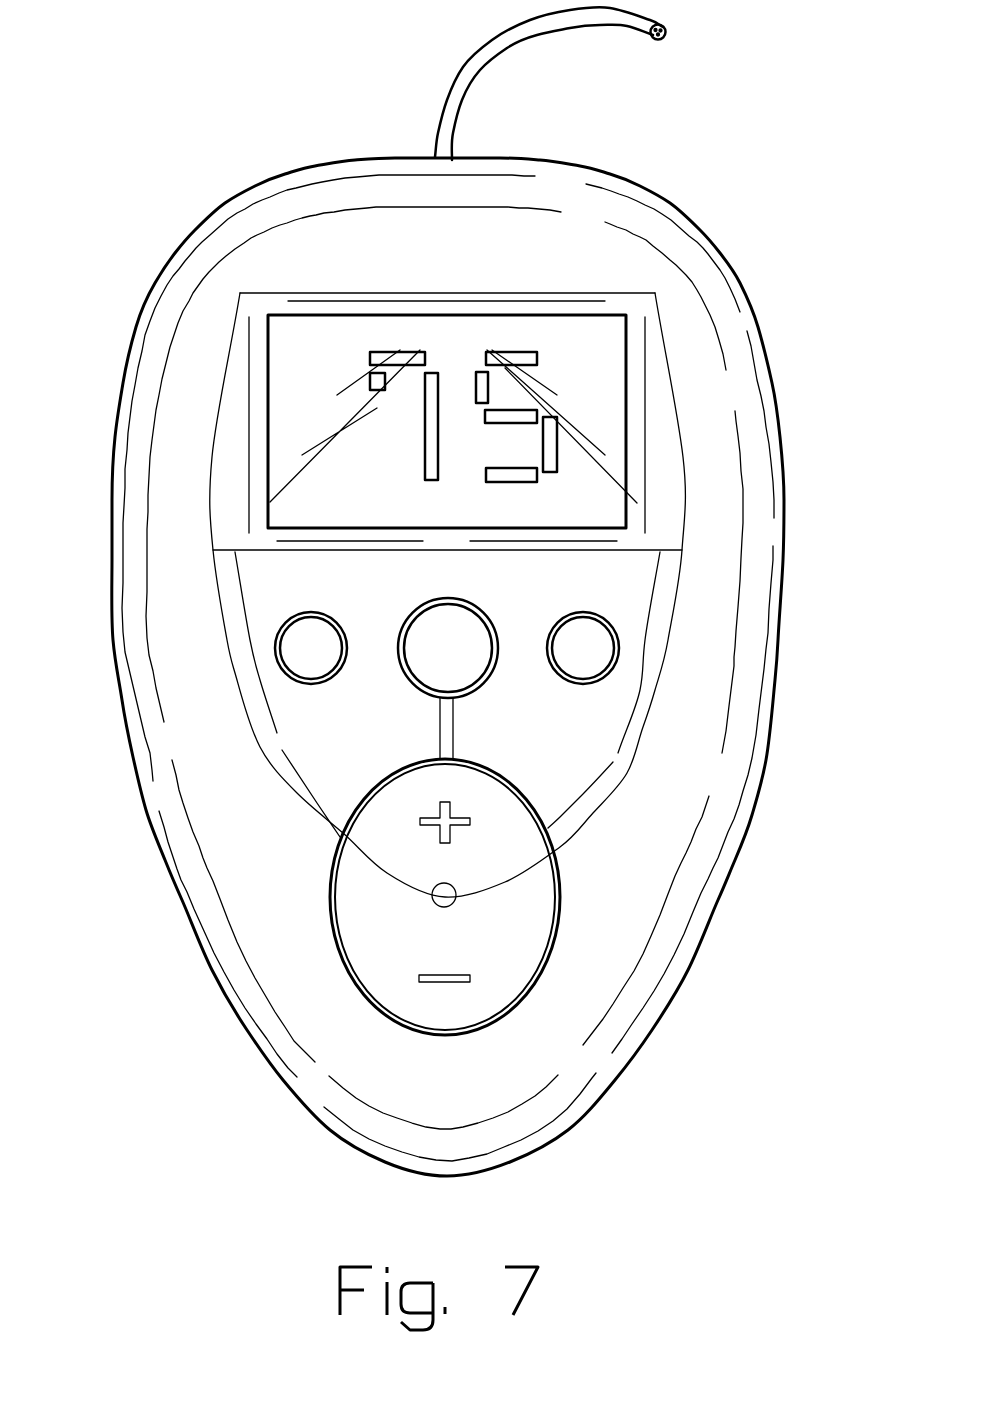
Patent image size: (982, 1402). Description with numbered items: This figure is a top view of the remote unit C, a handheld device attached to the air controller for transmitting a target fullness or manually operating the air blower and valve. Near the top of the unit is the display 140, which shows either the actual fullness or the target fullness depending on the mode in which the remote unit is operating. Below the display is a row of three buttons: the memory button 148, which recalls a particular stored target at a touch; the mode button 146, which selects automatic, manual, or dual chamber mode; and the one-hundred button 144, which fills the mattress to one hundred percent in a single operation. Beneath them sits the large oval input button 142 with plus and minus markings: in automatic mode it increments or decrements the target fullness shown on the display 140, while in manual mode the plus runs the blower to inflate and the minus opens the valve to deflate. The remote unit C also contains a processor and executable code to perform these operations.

The remote unit C is at (800, 426).
The display 140 is at (588, 330).
The input button 142 is at (510, 963).
The "100" button 144 is at (583, 663).
The mode button 146 is at (440, 663).
The memory button 148 is at (298, 658).